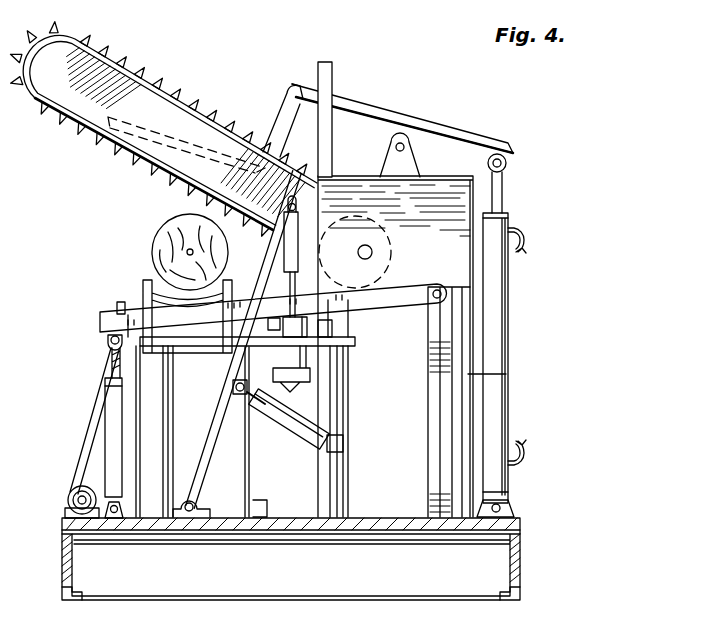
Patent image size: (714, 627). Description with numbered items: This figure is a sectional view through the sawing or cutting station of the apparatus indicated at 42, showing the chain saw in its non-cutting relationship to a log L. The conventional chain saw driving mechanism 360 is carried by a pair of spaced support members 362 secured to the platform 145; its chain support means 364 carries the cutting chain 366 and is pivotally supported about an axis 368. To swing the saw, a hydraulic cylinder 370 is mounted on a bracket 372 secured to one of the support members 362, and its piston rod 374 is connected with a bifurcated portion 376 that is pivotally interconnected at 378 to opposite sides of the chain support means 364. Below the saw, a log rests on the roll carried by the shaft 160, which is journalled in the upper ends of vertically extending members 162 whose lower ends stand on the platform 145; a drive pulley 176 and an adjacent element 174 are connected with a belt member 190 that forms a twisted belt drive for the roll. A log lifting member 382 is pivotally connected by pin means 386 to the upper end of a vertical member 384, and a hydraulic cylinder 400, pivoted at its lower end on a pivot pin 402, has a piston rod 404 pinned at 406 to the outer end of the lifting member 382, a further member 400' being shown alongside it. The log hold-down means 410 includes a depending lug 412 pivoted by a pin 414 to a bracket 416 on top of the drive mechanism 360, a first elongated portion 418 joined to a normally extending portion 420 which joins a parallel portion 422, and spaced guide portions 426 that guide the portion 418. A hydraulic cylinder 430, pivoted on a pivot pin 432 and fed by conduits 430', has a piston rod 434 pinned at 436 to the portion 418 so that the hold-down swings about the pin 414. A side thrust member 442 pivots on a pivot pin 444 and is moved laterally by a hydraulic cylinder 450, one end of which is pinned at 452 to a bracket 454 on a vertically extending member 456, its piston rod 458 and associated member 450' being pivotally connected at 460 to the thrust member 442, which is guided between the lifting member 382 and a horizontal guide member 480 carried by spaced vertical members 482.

The base frame 42 is at (554, 569).
The platform 145 is at (375, 537).
The log L is at (132, 246).
The shaft 160 is at (143, 290).
The vertically extending members 162 is at (248, 466).
The roller 174 is at (68, 509).
The drive pulley 176 is at (70, 496).
The belt member 190 is at (90, 438).
The chain saw driving mechanism 360 is at (460, 211).
The support members 362 is at (502, 374).
The chain support means 364 is at (70, 98).
The cutting chain 366 is at (126, 152).
The axis 368 is at (396, 252).
The hydraulic cylinder 370 is at (345, 360).
The bracket 372 is at (343, 421).
The piston rod 374 is at (297, 262).
The bifurcated portion 376 is at (300, 236).
The pivotal interconnection 378 is at (301, 210).
The log lifting member 382 is at (380, 300).
The vertical member 384 is at (442, 462).
The pin means 386 is at (446, 283).
The hydraulic cylinder 400 is at (82, 421).
The strut 400' is at (133, 423).
The pivot pin 402 is at (116, 519).
The piston rod 404 is at (108, 350).
The pin 406 is at (100, 333).
The log hold-down means 410 is at (371, 113).
The depending lug 412 is at (432, 138).
The pin 414 is at (395, 149).
The bracket 416 is at (413, 157).
The first elongated portion 418 is at (392, 108).
The normally extending portion 420 is at (274, 113).
The normally extending portion 422 is at (165, 122).
The guide portions 426 is at (332, 70).
The hydraulic cylinder 430 is at (528, 358).
The conduits 430' is at (550, 347).
The pivot pin 432 is at (511, 510).
The piston rod 434 is at (505, 198).
The pin 436 is at (508, 163).
The side thrust member 442 is at (232, 414).
The pivot pin 444 is at (192, 514).
The hydraulic cylinder 450 is at (289, 419).
The piston rod 450' is at (284, 452).
The pin 452 is at (345, 442).
The bracket 454 is at (333, 452).
The vertically extending member 456 is at (338, 486).
The piston rod 458 is at (222, 428).
The pivotal connection 460 is at (234, 380).
The second generally horizontally extending guide member 480 is at (280, 369).
The spaced vertically extending members 482 is at (345, 374).